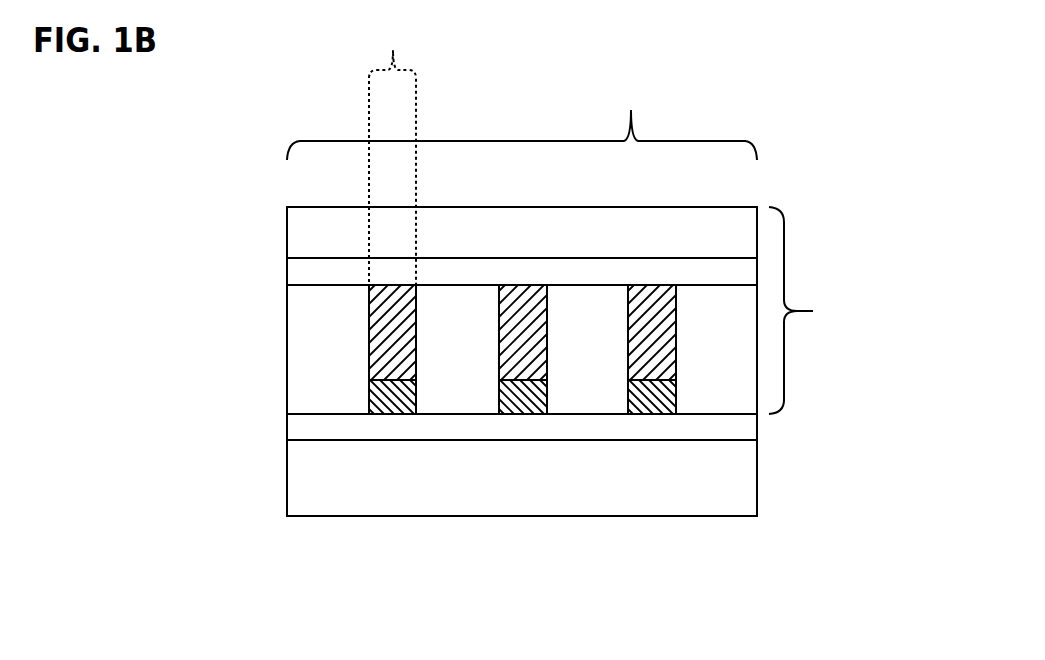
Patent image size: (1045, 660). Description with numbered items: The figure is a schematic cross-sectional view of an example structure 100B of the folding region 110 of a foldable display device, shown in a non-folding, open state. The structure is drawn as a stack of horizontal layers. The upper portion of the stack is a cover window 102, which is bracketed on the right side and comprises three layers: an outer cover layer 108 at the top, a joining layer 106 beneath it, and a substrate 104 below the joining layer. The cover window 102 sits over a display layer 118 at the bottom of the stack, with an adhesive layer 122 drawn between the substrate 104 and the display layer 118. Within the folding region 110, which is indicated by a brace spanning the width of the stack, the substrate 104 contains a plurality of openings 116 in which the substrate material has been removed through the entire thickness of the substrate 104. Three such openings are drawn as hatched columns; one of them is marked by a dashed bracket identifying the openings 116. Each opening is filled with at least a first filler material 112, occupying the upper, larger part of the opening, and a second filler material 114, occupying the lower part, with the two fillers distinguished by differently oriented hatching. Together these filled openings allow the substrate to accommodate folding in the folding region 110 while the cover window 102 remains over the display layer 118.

The example structure 100B is at (851, 119).
The cover window 102 is at (832, 310).
The substrate 104 is at (291, 347).
The joining layer 106 is at (291, 272).
The outer cover layer 108 is at (291, 217).
The folding region 110 is at (522, 117).
The first filler material 112 is at (405, 330).
The second filler material 114 is at (372, 385).
The openings 116 is at (395, 213).
The display layer 118 is at (291, 489).
The adhesive layer 122 is at (291, 426).